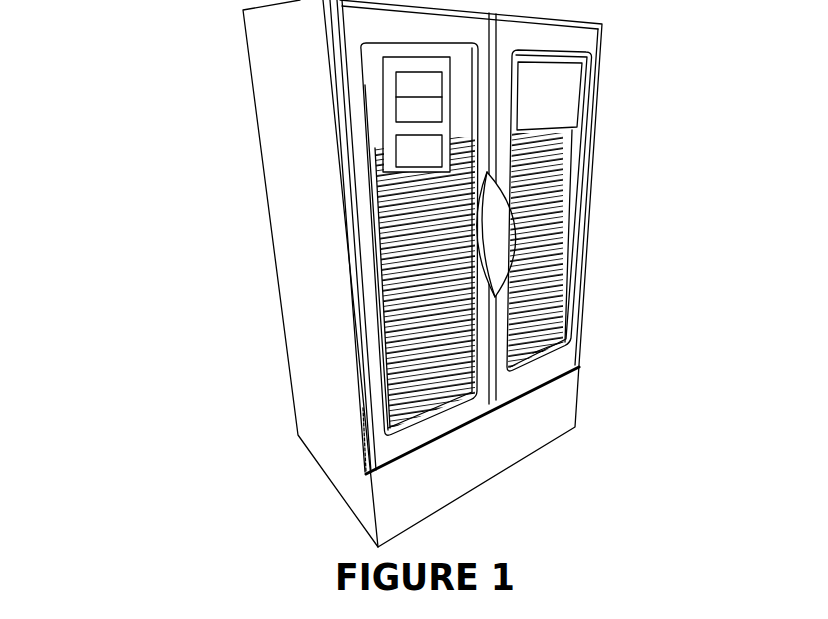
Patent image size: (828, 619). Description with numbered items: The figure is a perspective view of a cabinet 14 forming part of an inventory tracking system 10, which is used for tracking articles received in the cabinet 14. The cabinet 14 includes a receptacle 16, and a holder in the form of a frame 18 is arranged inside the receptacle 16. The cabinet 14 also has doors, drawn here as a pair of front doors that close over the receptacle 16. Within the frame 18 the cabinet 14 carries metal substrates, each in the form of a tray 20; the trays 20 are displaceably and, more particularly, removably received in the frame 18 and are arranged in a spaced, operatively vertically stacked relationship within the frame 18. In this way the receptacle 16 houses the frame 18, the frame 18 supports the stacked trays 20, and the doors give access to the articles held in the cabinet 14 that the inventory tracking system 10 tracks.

The inventory tracking system 10 is at (155, 130).
The cabinet 14 is at (190, 95).
The receptacle 16 is at (577, 167).
The frame 18 is at (533, 353).
The tray 20 is at (410, 208).